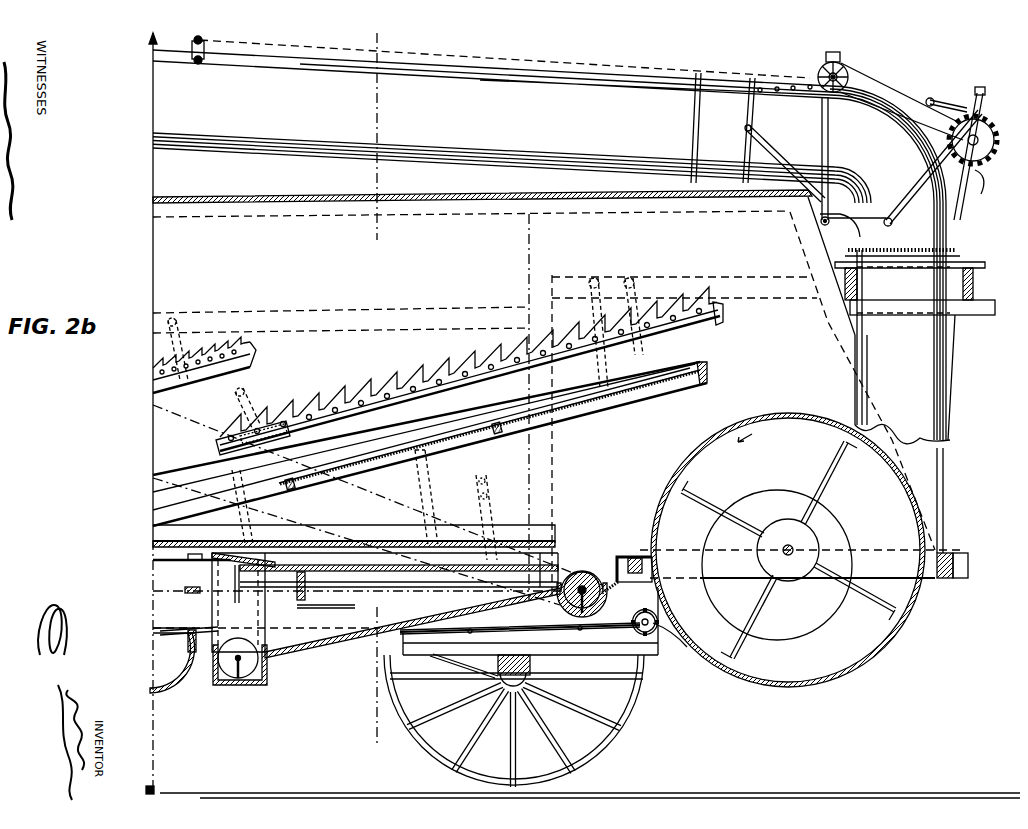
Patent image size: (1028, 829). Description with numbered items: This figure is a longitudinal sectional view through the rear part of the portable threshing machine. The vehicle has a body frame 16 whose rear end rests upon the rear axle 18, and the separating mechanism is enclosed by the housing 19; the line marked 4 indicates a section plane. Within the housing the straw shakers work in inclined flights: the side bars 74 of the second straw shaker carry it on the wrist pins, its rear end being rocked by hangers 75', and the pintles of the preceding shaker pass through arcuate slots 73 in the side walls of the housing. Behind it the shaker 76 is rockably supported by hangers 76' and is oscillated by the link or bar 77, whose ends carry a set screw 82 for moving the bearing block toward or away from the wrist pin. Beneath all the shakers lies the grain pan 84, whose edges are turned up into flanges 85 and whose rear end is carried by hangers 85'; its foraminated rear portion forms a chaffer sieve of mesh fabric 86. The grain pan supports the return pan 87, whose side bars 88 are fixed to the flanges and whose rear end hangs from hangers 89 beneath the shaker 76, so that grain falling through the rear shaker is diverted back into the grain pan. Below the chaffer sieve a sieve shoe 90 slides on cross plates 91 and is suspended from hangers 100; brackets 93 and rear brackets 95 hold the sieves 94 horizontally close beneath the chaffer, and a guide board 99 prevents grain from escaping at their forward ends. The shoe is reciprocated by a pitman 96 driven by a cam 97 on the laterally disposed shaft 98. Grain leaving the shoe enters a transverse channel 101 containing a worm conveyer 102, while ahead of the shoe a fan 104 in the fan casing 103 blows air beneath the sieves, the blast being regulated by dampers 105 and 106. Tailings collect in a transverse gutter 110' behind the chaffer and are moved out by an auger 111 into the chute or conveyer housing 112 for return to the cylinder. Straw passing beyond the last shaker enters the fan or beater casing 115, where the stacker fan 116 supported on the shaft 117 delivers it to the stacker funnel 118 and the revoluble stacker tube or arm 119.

The section line 4 is at (372, 737).
The housing 19 is at (216, 200).
The stacker tube or arm 119 is at (907, 139).
The stacker funnel 118 is at (923, 392).
The fan or beater casing 115 is at (760, 414).
The stacker fan 116 is at (826, 472).
The shaft 117 is at (792, 551).
The body frame 16 is at (946, 582).
The flanges 85 is at (354, 523).
The mesh fabric 86 is at (275, 540).
The grain pan 84 is at (172, 541).
The sieves 94 is at (390, 573).
The guide board 99 is at (243, 602).
The groove or channel 101 is at (247, 685).
The worm conveyer 102 is at (226, 677).
The brackets 93 is at (298, 599).
The wind guide or damper 105 is at (185, 590).
The damper 106 is at (206, 628).
The fan 104 is at (182, 641).
The fan casing 103 is at (156, 682).
The sieve shoe 90 is at (336, 646).
The cross plates 91 is at (535, 600).
The pitman 96 is at (552, 628).
The gutter or channel 110' is at (520, 638).
The adjustable brackets 95 is at (571, 582).
The auger or worm conveyer 111 is at (597, 584).
The laterally disposed shaft 98 is at (639, 634).
The chute or conveyer housing 112 is at (637, 603).
The cam 97 is at (658, 622).
The rear axle 18 is at (509, 692).
The arcuate slots 73 is at (205, 344).
The side bars 74 is at (251, 366).
The hangers 75' is at (199, 334).
The shaker 76 is at (471, 354).
The hangers 76' is at (269, 406).
The set screw 82 is at (295, 437).
The link or bar 77 is at (180, 470).
The hangers 89 is at (628, 382).
The side bars 88 is at (175, 507).
The hangers 100 is at (495, 507).
The return pan 87 is at (468, 432).
The hangers 85' is at (441, 497).